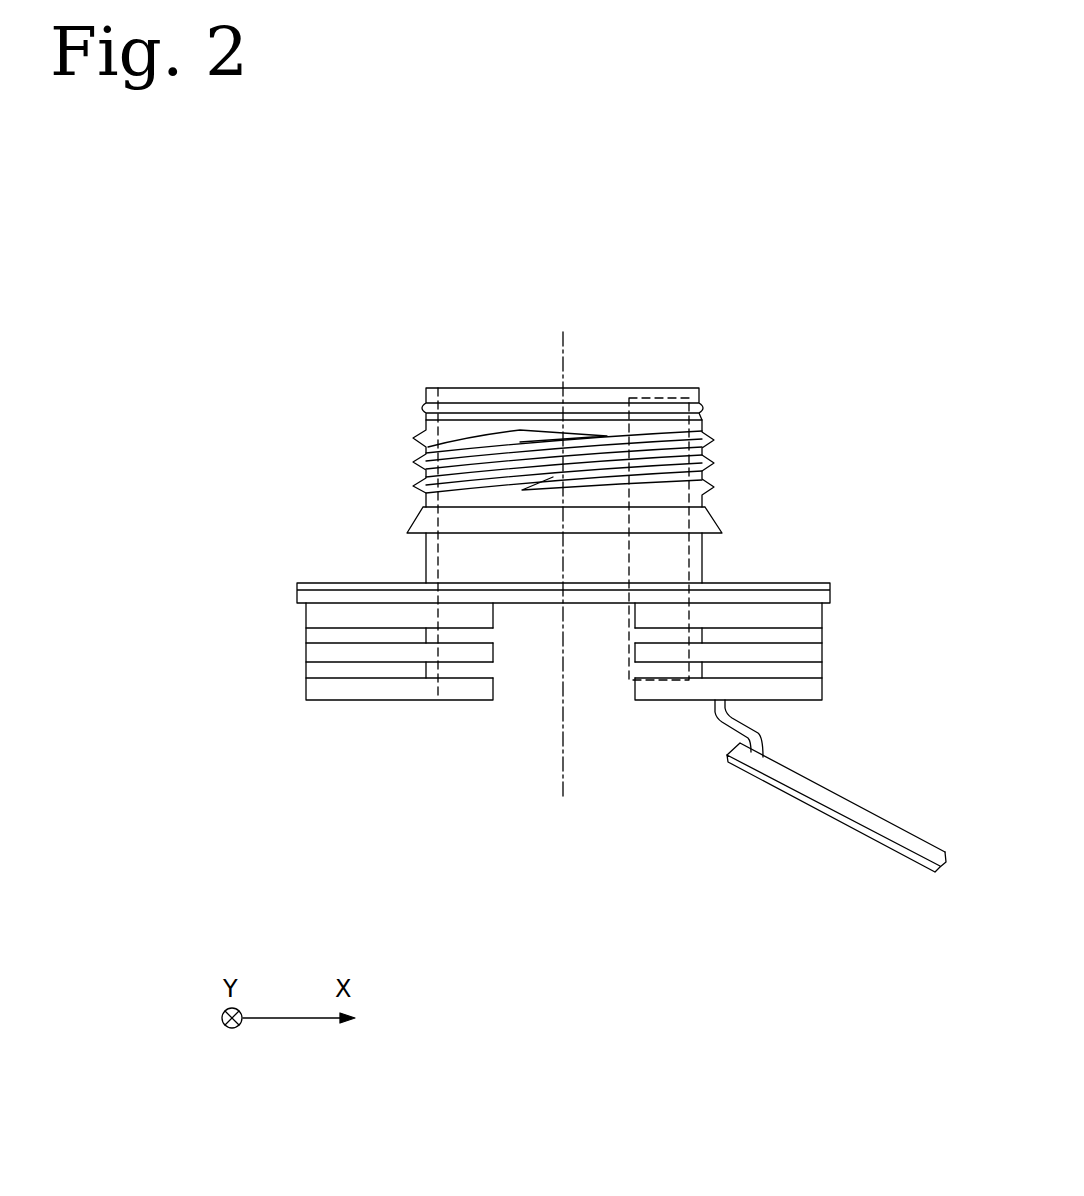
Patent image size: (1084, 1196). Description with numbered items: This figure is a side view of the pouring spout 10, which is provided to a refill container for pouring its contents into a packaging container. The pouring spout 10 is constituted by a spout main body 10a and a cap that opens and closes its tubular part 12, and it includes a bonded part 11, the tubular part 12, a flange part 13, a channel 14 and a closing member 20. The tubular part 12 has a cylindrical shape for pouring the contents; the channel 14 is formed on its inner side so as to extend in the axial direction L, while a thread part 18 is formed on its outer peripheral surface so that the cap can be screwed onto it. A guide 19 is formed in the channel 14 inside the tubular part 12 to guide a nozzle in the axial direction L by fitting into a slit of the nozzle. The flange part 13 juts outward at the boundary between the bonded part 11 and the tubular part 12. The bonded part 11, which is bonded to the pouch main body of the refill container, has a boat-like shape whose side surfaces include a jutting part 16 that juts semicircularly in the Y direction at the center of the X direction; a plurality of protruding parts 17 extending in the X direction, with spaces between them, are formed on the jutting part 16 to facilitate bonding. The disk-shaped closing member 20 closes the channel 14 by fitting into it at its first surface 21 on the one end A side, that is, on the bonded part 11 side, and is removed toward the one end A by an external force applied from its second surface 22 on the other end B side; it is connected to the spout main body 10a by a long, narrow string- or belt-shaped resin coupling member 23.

The pouring spout 10 is at (582, 301).
The spout main body 10a is at (736, 503).
The bonded part 11 is at (539, 688).
The tubular part 12 is at (701, 395).
The flange part 13 is at (805, 583).
The channel 14 is at (437, 430).
The jutting part 16 is at (597, 688).
The protruding parts 17 is at (315, 685).
The thread part 18 is at (704, 433).
The guide 19 is at (669, 390).
The closing member 20 is at (836, 826).
The first surface 21 is at (873, 822).
The lower surface of bar 22 is at (880, 845).
The coupling member 23 is at (765, 733).
The one end A is at (352, 702).
The other end B is at (534, 388).
The axial direction L is at (565, 344).